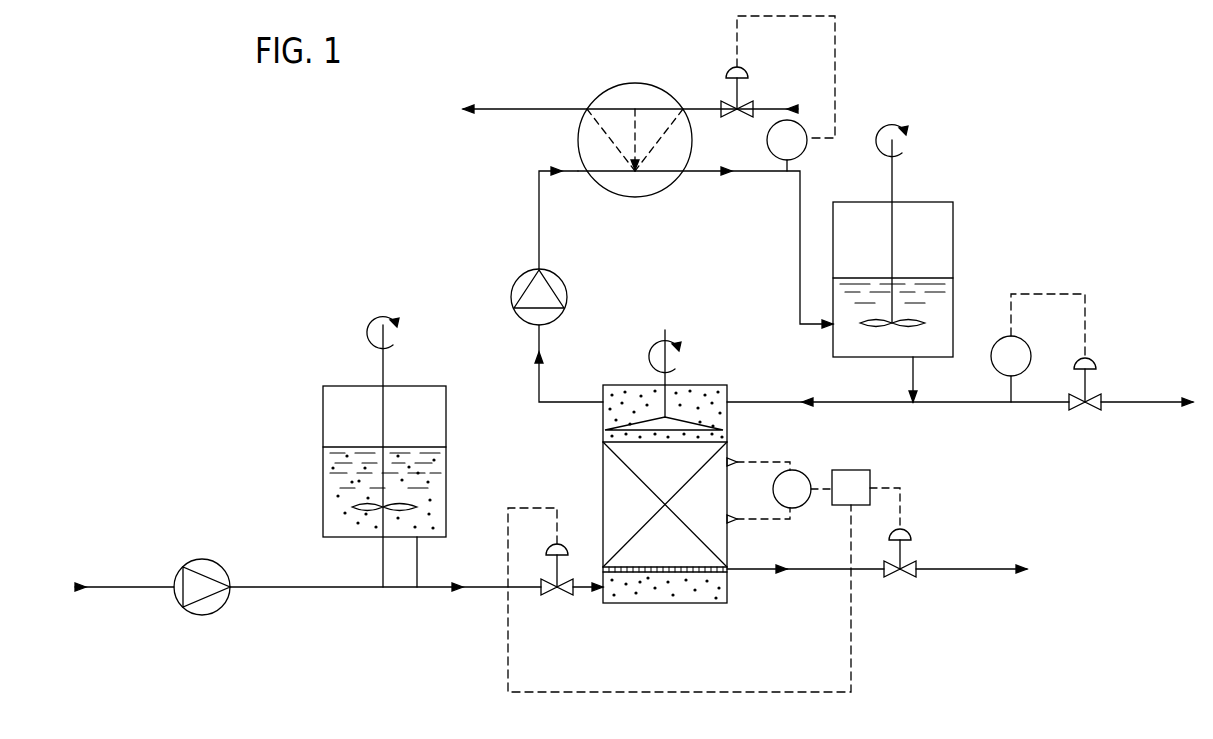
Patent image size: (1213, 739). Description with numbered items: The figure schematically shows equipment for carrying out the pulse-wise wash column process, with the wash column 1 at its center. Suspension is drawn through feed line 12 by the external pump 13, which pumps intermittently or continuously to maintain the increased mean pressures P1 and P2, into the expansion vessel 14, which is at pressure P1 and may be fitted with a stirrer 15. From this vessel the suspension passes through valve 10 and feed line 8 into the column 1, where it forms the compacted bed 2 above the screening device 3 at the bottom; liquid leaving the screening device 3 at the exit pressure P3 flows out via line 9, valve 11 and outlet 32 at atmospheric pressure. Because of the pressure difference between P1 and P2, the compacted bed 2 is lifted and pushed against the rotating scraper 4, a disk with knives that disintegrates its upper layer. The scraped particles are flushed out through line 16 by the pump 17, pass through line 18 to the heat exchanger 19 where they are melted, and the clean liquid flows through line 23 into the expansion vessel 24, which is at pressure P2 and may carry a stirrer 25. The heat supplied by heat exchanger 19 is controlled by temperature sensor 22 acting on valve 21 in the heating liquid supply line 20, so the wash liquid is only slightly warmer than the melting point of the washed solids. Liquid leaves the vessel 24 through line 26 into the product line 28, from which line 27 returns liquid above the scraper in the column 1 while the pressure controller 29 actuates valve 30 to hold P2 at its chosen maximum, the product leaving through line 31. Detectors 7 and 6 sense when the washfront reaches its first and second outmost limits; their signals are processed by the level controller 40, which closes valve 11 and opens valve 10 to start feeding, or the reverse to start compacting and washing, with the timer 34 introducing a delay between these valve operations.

The wash column 1 is at (603, 455).
The compacted bed 2 is at (620, 500).
The screening device 3 is at (712, 573).
The scraper 4 is at (678, 422).
The detector 6 is at (735, 459).
The detector 7 is at (757, 553).
The feed line 8 is at (583, 592).
The liquid exit line 9 is at (810, 572).
The valve 10 is at (548, 593).
The valve 11 is at (903, 577).
The feed line to pump 12 is at (127, 588).
The pump 13 is at (212, 605).
The expansion vessel 14 is at (322, 508).
The stirrer 15 is at (407, 505).
The recycle line 16 is at (538, 385).
The pump 17 is at (558, 280).
The line to heat exchanger 18 is at (539, 210).
The heat exchanger 19 is at (613, 97).
The heating liquid supply line 20 is at (773, 108).
The valve 21 is at (733, 67).
The temperature sensor 22 is at (803, 152).
The line from heat exchanger 23 is at (708, 172).
The expansion vessel 24 is at (953, 257).
The stirrer 25 is at (920, 323).
The outlet line of expansion vessel 26 is at (915, 403).
The line to column top 27 is at (827, 403).
The product line 28 is at (980, 403).
The pressure controller 29 is at (1032, 350).
The valve 30 is at (1073, 408).
The product outlet line 31 is at (1137, 403).
The liquid outlet line 32 is at (965, 572).
The timer 34 is at (870, 478).
The level controller 40 is at (800, 502).
The pressure in expansion vessel 14 P1 is at (337, 402).
The pressure in expansion vessel 24 P2 is at (937, 227).
The exit pressure at screening device P3 is at (638, 573).